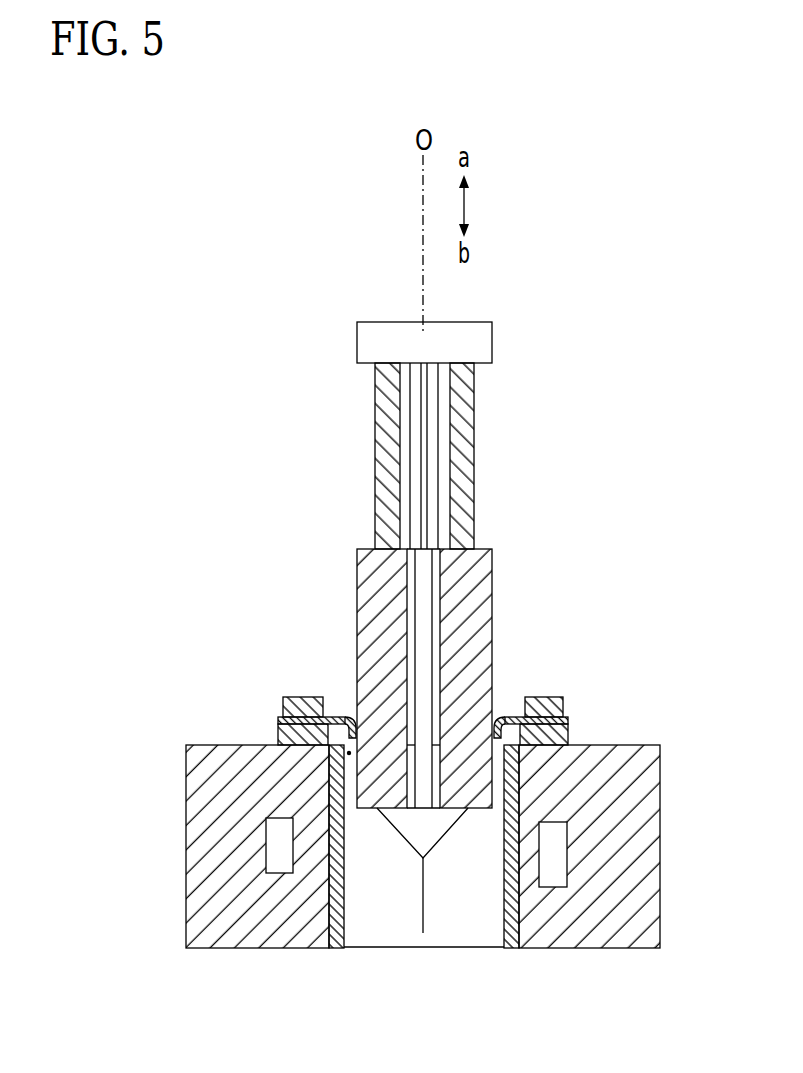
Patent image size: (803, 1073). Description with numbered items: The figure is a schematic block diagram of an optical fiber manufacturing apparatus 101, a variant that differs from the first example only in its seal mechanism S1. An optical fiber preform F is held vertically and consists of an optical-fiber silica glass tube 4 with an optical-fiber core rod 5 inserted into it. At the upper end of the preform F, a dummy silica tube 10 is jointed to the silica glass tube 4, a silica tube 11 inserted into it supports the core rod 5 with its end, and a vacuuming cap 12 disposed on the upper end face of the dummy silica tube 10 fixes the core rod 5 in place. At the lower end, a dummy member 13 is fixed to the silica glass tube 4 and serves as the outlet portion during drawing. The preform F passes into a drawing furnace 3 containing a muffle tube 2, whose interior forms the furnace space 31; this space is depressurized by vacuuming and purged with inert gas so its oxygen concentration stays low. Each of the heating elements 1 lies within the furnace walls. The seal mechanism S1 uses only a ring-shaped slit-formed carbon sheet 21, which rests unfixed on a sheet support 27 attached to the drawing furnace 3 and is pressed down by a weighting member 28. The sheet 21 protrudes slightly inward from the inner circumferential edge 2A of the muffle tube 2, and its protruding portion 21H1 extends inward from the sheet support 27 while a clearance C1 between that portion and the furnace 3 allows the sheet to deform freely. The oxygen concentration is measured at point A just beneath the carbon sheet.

The optical fiber manufacturing apparatus 101 is at (272, 292).
The vacuuming cap 12 is at (492, 340).
The dummy silica tube 10 is at (421, 456).
The silica tube 11 is at (410, 492).
The optical-fiber silica glass tube 4 is at (477, 590).
The optical-fiber core rod 5 is at (432, 657).
The optical fiber preform F is at (469, 678).
The dummy member 13 is at (445, 837).
The furnace space 31 is at (378, 928).
The drawing furnace 3 is at (208, 843).
The muffle tube 2 is at (598, 880).
The inner circumferential edge 2A is at (503, 905).
The heater 1 is at (280, 857).
The sheet support 27 is at (287, 730).
The weighting member 28 is at (302, 698).
The slit-formed carbon sheet 21 is at (460, 686).
The protruding portion 21H1 is at (350, 715).
The clearance C1 is at (510, 733).
The seal mechanism S1 is at (266, 710).
The point A is at (345, 757).